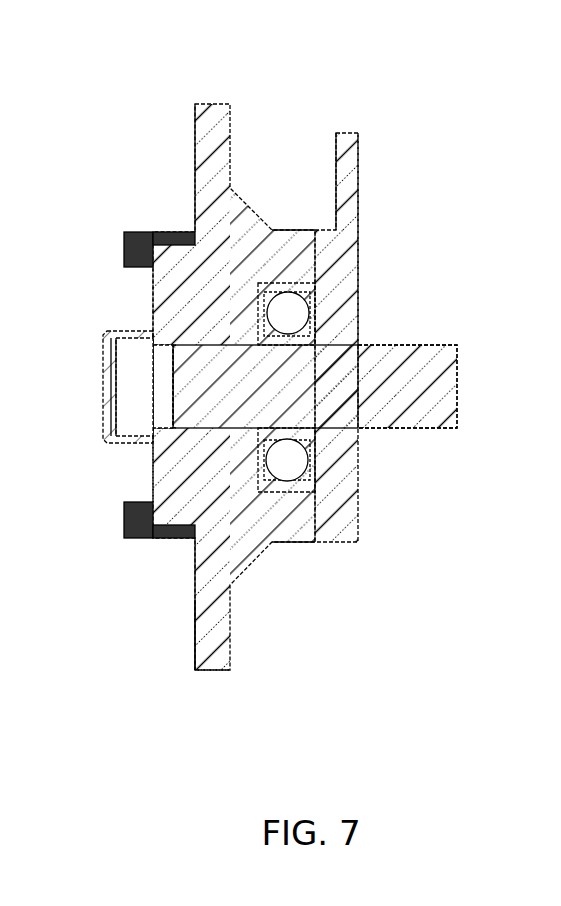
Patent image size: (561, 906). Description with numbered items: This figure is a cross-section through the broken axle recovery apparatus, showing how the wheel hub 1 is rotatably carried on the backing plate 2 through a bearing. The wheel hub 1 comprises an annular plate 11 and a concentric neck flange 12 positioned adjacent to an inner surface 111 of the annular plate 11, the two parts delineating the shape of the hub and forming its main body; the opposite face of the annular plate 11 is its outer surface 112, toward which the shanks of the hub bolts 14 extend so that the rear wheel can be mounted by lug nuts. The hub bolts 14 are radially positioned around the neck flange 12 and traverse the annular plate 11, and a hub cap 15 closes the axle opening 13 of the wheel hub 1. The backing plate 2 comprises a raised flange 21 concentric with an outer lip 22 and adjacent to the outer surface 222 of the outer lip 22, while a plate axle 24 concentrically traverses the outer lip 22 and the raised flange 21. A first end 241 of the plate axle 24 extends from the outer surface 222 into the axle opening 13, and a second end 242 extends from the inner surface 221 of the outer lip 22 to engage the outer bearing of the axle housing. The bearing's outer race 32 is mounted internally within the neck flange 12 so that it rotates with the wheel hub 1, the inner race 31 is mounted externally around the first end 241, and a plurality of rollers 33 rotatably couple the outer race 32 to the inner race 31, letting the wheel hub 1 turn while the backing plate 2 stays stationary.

The wheel hub 1 is at (183, 407).
The annular plate 11 is at (224, 633).
The inner surface 111 is at (231, 665).
The outer surface 112 is at (195, 662).
The neck flange 12 is at (278, 533).
The axle opening 13 is at (161, 348).
The hub bolts 14 is at (120, 250).
The hub cap 15 is at (104, 398).
The backing plate 2 is at (352, 328).
The raised flange 21 is at (322, 240).
The outer lip 22 is at (358, 133).
The inner surface 221 is at (358, 175).
The outer surface 222 is at (336, 138).
The plate axle 24 is at (387, 428).
The first end 241 is at (195, 415).
The second end 242 is at (442, 381).
The inner race 31 is at (288, 342).
The outer race 32 is at (274, 290).
The rollers 33 is at (298, 305).